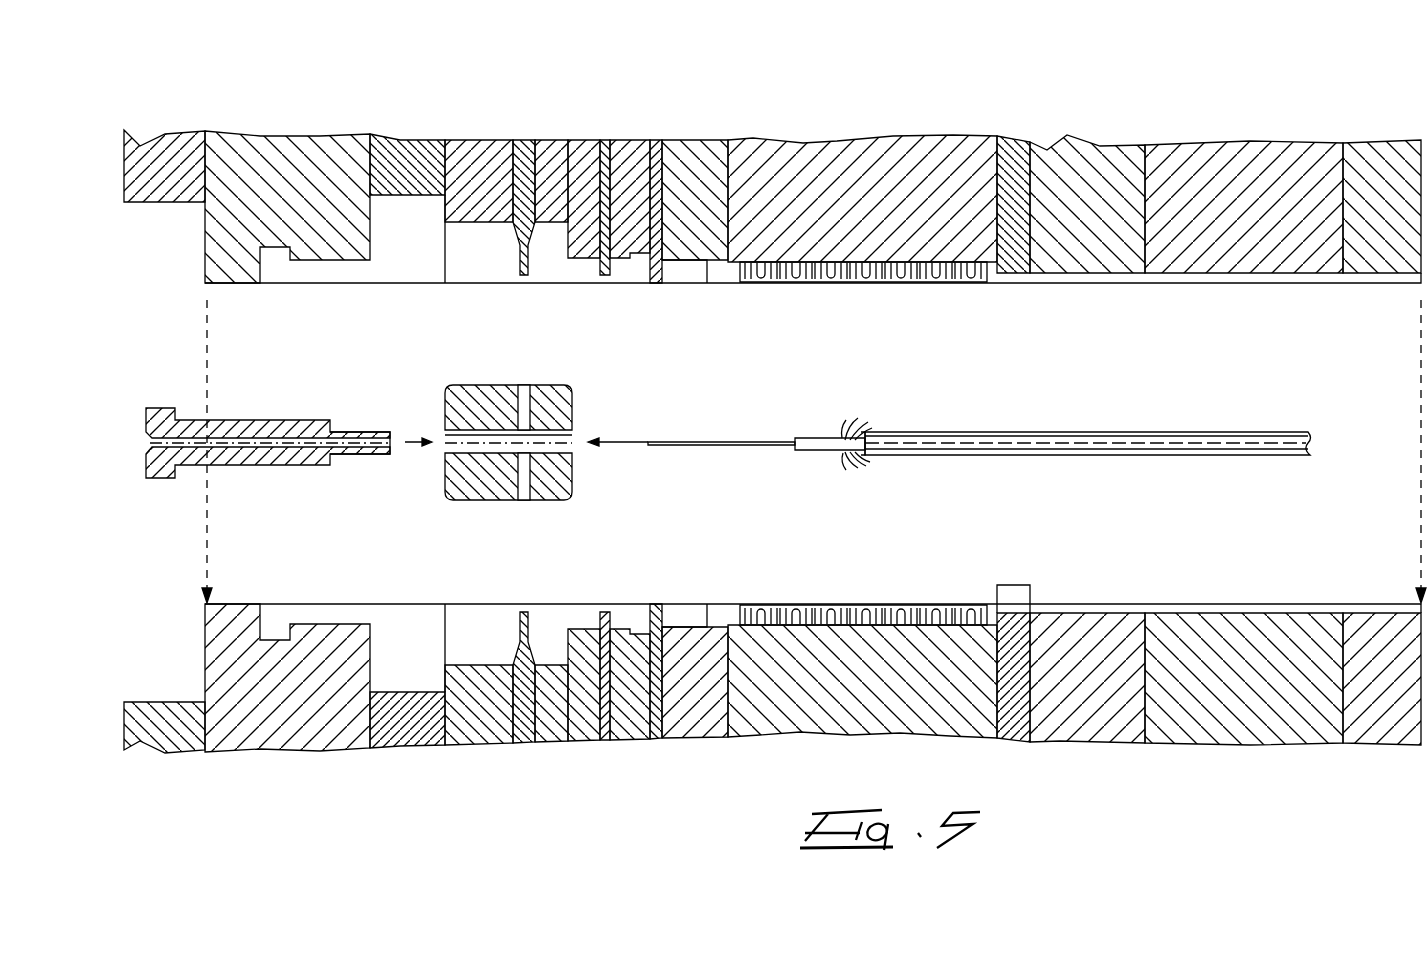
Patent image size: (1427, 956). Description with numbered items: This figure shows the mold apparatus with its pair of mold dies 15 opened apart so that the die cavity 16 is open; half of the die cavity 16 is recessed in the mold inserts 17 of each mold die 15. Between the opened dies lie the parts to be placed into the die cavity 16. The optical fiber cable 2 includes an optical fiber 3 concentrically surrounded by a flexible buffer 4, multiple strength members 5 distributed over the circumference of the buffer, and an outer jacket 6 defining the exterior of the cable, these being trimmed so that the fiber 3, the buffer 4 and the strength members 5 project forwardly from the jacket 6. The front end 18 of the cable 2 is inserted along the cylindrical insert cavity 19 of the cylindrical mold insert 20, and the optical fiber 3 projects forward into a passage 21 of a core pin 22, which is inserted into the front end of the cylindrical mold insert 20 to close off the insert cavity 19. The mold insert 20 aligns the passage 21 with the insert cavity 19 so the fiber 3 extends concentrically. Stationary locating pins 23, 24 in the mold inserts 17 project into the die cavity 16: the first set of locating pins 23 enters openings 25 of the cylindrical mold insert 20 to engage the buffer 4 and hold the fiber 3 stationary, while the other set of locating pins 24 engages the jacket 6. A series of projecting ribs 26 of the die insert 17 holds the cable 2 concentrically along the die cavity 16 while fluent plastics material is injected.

The optical fiber cable 2 is at (1140, 432).
The optical fiber 3 is at (757, 442).
The flexible buffer 4 is at (803, 450).
The strength members 5 is at (857, 436).
The outer jacket 6 is at (1090, 449).
The mold dies 15 is at (325, 137).
The die cavity 16 is at (703, 283).
The mold inserts 17 is at (693, 145).
The front end 18 is at (853, 440).
The insert cavity 19 is at (472, 431).
The cylindrical mold insert 20 is at (500, 385).
The passage 21 is at (337, 440).
The core pin 22 is at (263, 420).
The locating pins 23 is at (513, 277).
The locating pins 24 is at (605, 276).
The openings 25 is at (530, 410).
The projecting ribs 26 is at (750, 283).